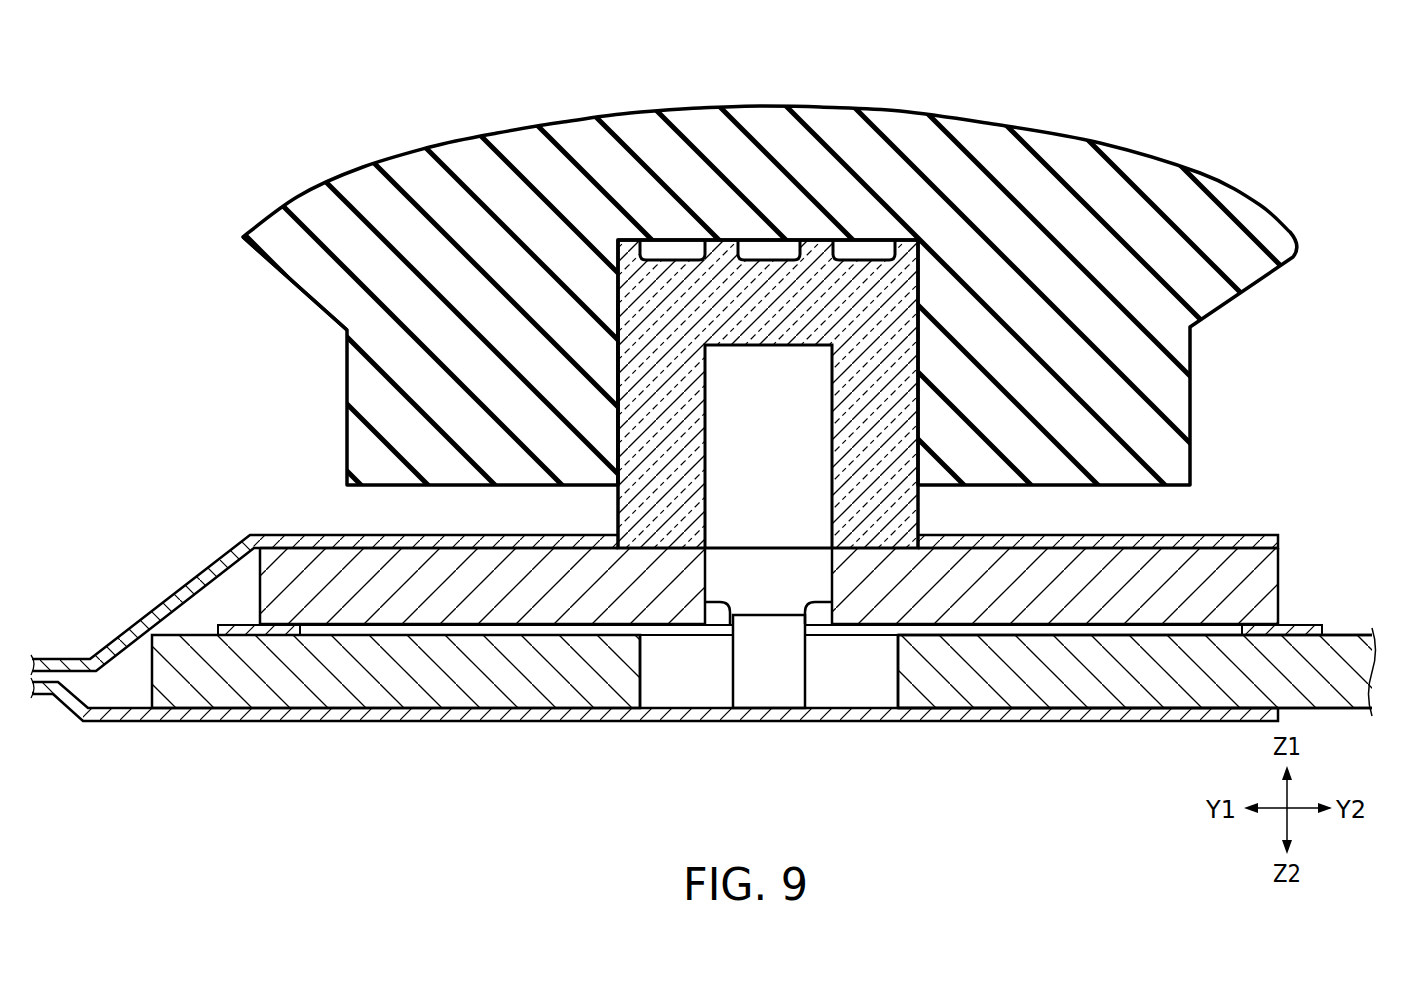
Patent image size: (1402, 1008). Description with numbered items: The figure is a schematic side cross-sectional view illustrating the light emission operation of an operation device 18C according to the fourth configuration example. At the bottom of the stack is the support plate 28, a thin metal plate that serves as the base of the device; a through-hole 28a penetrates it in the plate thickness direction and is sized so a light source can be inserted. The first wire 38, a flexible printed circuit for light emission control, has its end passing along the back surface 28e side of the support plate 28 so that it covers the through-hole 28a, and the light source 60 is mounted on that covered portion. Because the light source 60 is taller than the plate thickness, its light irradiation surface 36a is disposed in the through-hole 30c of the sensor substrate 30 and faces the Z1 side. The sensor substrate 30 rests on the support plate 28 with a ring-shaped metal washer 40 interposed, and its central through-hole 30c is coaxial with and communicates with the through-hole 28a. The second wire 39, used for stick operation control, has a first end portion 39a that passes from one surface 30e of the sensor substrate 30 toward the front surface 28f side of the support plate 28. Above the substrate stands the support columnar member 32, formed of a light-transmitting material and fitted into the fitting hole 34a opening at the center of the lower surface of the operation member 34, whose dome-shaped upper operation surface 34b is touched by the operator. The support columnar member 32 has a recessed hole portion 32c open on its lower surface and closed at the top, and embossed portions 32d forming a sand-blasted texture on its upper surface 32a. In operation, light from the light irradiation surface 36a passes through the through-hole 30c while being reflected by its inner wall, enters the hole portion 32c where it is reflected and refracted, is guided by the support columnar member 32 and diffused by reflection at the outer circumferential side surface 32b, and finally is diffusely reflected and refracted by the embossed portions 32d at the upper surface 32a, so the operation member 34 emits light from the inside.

The operation device 18C is at (328, 56).
The operation member 34 is at (1243, 190).
The fitting hole 34a is at (620, 412).
The operation surface 34b is at (288, 202).
The support columnar member 32 is at (925, 346).
The upper surface 32a is at (633, 243).
The outer circumferential side surface 32b is at (620, 358).
The hole portion 32c is at (834, 388).
The embossed portion 32d is at (863, 243).
The wire 39 is at (282, 533).
The first end portion 39a is at (518, 548).
The sensor substrate 30 is at (360, 600).
The through-hole 30c is at (730, 607).
The light irradiation surface 36a is at (820, 607).
The one surface 30e is at (1233, 540).
The metal washer 40 is at (1306, 628).
The support plate 28 is at (220, 680).
The through-hole 28a is at (897, 678).
The back surface 28e is at (1030, 722).
The front surface 28f is at (1100, 630).
The light source 60 is at (768, 696).
The wire 38 is at (111, 726).